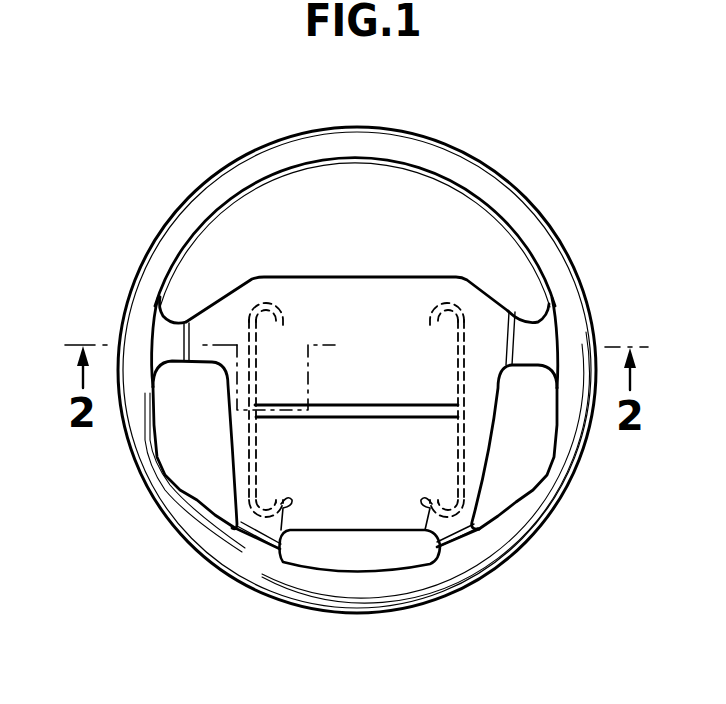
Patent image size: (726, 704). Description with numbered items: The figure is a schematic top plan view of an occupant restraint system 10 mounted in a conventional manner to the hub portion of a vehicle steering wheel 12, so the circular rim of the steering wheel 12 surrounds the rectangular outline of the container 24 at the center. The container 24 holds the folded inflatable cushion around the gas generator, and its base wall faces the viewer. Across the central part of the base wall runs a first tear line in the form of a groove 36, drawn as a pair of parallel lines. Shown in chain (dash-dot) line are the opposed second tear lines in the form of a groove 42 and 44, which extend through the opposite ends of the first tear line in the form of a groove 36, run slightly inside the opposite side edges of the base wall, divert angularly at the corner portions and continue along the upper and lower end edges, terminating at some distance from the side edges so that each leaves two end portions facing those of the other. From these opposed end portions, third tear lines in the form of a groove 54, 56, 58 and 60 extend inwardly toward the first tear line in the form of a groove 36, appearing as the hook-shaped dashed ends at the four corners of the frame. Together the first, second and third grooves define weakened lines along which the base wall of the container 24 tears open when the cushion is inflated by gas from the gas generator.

The occupant restraint system 10 is at (484, 249).
The vehicle steering wheel 12 is at (238, 175).
The container 24 is at (458, 293).
The first tear line in the form of a groove 36 is at (363, 415).
The second tear line in the form of a groove 42 is at (250, 443).
The second tear line in the form of a groove 44 is at (463, 452).
The third tear line in the form of a groove 54 is at (276, 538).
The third tear line in the form of a groove 56 is at (440, 544).
The third tear line in the form of a groove 58 is at (276, 304).
The third tear line in the form of a groove 60 is at (435, 302).